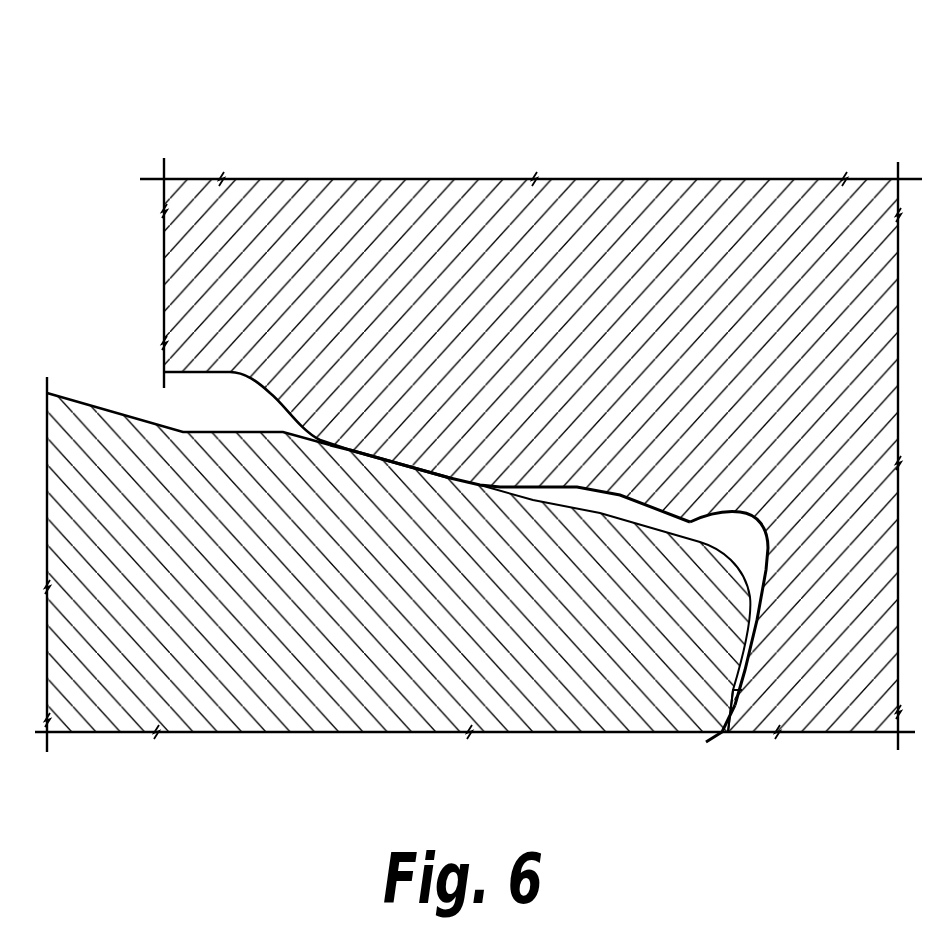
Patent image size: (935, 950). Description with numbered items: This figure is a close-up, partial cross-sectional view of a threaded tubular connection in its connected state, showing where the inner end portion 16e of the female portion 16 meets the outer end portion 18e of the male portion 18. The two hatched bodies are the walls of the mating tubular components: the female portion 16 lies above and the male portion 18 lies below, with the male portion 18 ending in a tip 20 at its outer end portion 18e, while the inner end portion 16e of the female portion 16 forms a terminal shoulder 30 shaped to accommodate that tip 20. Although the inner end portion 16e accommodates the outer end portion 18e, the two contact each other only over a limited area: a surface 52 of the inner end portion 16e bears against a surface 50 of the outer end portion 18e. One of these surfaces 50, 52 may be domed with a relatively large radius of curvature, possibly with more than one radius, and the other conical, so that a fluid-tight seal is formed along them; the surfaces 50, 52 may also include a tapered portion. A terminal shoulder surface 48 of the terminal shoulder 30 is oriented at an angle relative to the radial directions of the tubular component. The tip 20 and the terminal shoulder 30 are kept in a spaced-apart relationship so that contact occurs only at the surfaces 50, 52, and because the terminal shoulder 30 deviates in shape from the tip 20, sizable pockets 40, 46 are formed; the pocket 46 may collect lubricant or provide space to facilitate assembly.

The female portion 16 is at (518, 178).
The inner end portion of the female portion 16e is at (672, 100).
The male portion 18 is at (260, 733).
The outer end portion of the male portion 18e is at (631, 762).
The tip 20 is at (743, 700).
The terminal shoulder 30 is at (714, 741).
The pocket 40 is at (742, 543).
The pocket 46 is at (587, 503).
The terminal shoulder surface 48 is at (746, 660).
The surface of the outer end portion 50 is at (392, 463).
The surface of the inner end portion 52 is at (407, 466).